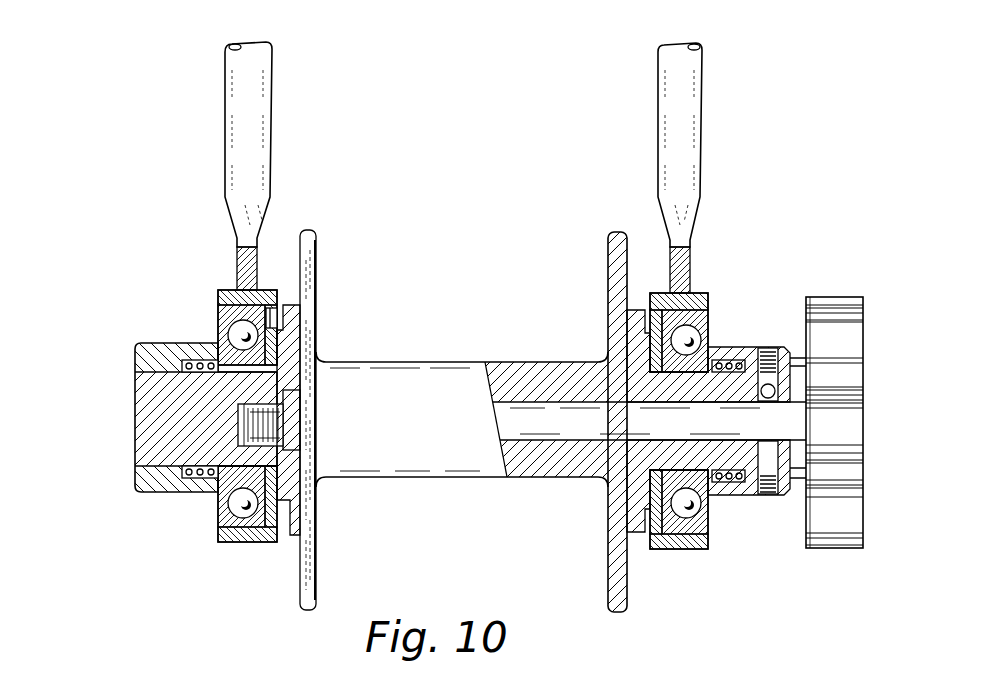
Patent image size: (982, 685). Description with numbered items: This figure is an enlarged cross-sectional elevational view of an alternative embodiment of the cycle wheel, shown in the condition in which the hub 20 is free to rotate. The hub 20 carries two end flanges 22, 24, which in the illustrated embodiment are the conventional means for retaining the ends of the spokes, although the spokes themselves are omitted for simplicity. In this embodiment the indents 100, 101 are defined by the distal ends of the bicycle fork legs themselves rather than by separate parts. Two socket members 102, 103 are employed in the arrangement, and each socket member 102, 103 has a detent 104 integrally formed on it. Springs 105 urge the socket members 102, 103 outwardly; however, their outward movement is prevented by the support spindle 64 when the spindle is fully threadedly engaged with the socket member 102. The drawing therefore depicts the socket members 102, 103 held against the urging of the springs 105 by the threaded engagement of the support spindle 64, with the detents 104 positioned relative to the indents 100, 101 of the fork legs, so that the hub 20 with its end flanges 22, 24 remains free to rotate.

The hub 20 is at (395, 372).
The end flange 22 is at (310, 268).
The end flange 24 is at (608, 260).
The support spindle 64 is at (570, 420).
The indent 100 is at (277, 320).
The indent 101 is at (665, 307).
The socket member 102 is at (143, 443).
The socket member 103 is at (735, 366).
The detent 104 is at (287, 300).
The spring 105 is at (198, 358).